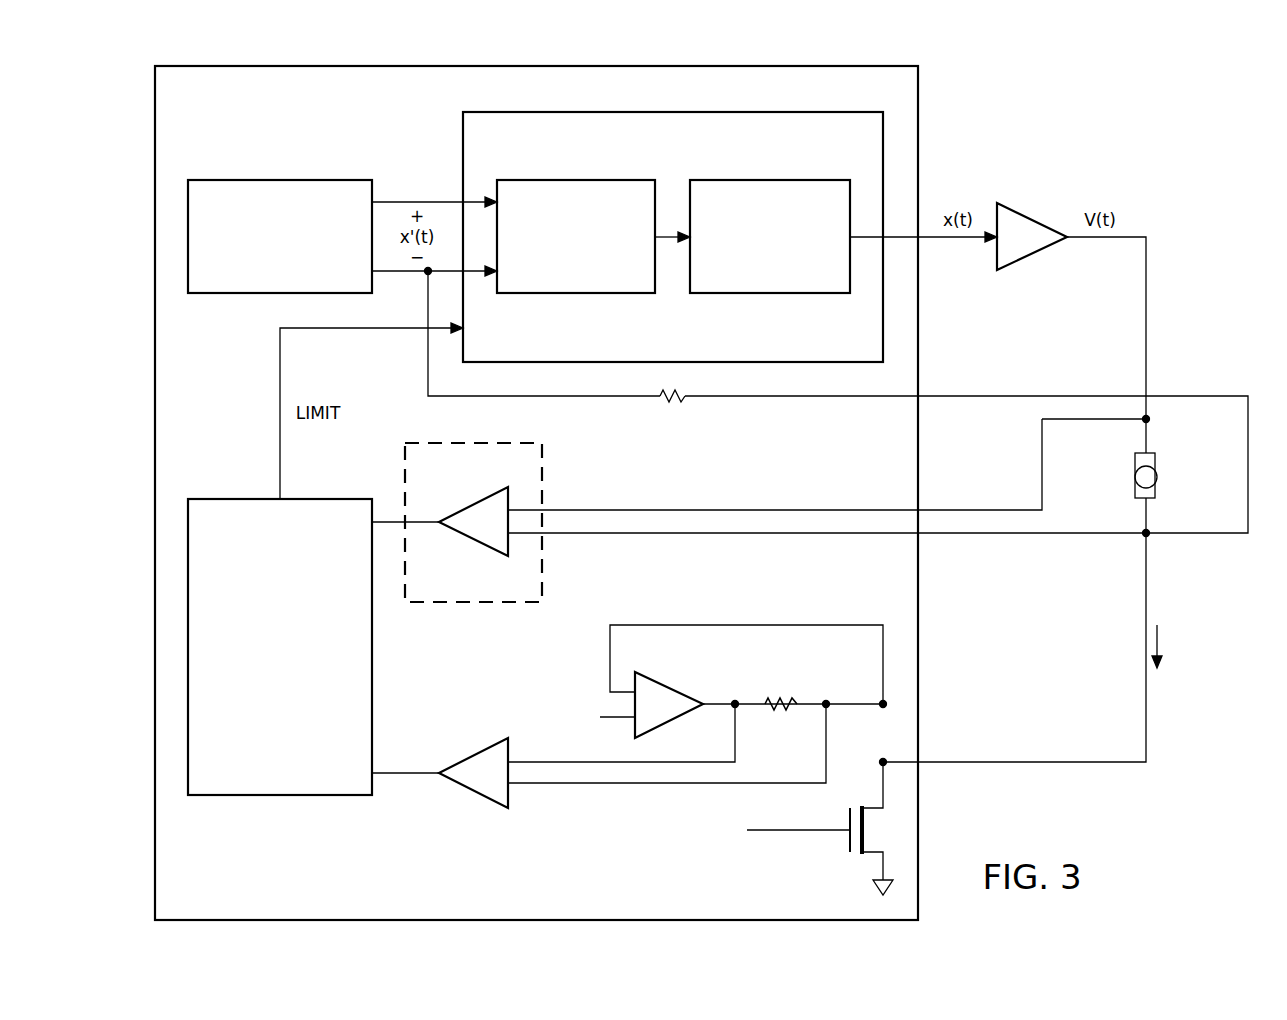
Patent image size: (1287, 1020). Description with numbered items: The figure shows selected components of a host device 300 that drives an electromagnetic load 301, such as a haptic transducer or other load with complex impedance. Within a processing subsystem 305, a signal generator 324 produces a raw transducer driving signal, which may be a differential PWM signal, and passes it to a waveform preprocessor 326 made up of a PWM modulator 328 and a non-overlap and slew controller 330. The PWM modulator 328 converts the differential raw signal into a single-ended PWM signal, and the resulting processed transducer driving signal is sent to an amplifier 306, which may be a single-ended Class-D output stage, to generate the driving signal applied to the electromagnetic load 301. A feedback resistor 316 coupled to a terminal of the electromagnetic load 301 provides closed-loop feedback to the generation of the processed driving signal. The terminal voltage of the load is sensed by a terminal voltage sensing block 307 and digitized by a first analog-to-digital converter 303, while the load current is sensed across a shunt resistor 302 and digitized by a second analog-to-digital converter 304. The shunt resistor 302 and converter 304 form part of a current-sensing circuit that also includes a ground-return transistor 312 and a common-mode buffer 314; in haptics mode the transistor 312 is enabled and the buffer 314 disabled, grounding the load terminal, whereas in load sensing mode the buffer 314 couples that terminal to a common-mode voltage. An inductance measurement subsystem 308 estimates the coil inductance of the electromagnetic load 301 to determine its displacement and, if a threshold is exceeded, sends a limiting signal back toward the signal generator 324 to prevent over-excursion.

The host device 300 is at (1150, 104).
The electromagnetic load 301 is at (1158, 477).
The shunt resistor 302 is at (781, 710).
The first analog-to-digital converter 303 is at (478, 540).
The second analog-to-digital converter 304 is at (478, 790).
The processing subsystem 305 is at (376, 60).
The amplifier 306 is at (1035, 220).
The terminal voltage sensing block 307 is at (545, 480).
The inductance measurement subsystem 308 is at (258, 708).
The ground-return transistor 312 is at (840, 846).
The common-mode buffer 314 is at (670, 683).
The feedback resistor 316 is at (672, 402).
The signal generator 324 is at (280, 178).
The waveform preprocessor 326 is at (452, 142).
The PWM modulator 328 is at (575, 296).
The non-overlap and slew controller 330 is at (770, 296).